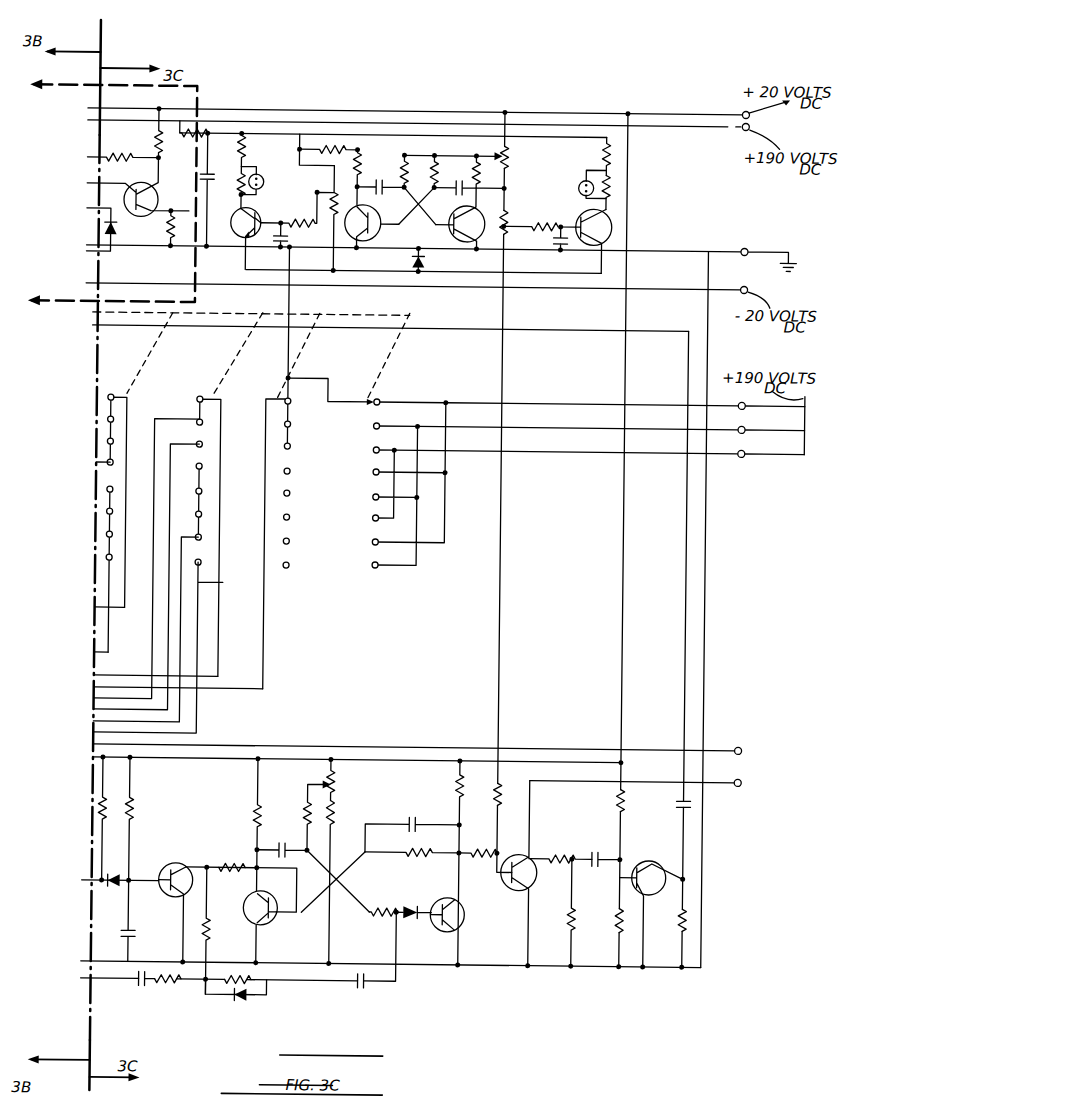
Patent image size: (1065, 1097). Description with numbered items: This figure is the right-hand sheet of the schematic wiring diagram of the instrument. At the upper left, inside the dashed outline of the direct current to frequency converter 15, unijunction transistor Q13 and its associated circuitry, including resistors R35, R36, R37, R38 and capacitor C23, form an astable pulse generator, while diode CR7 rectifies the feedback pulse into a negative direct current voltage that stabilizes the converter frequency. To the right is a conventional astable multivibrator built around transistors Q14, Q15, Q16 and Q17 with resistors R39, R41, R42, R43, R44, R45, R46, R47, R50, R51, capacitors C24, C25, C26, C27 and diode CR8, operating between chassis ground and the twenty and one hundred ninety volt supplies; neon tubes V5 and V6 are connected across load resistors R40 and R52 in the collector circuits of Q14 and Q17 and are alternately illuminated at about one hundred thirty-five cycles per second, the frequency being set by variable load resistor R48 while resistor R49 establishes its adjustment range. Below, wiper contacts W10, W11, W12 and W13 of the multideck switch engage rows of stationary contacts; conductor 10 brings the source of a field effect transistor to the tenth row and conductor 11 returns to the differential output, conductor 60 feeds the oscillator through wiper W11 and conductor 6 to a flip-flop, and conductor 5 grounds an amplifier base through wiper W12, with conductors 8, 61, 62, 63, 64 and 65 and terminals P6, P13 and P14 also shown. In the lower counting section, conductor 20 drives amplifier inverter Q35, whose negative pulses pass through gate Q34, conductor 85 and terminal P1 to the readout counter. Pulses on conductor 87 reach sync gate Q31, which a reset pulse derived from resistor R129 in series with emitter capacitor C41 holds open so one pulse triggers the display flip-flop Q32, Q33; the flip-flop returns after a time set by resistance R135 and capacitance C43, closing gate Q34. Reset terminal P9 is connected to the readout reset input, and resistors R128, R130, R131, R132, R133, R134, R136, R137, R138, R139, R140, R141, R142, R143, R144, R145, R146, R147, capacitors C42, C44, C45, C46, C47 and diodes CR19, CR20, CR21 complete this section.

The direct current to frequency converter 15 is at (200, 100).
The resistor R35 is at (122, 151).
The resistor R36 is at (140, 134).
The resistor R37 is at (158, 229).
The resistor R38 is at (189, 140).
The resistor R39 is at (259, 149).
The load resistor R40 is at (227, 187).
The resistor R41 is at (297, 208).
The resistor R42 is at (328, 158).
The resistor R43 is at (331, 196).
The resistor R44 is at (372, 176).
The resistor R45 is at (416, 162).
The resistor R46 is at (474, 157).
The resistor R47 is at (454, 172).
The variable load resistor R48 is at (523, 154).
The resistor R49 is at (509, 207).
The resistor R50 is at (538, 215).
The resistor R51 is at (614, 150).
The load resistor R52 is at (613, 181).
The capacitor C23 is at (190, 191).
The capacitor C24 is at (298, 235).
The capacitor C25 is at (380, 180).
The capacitor C26 is at (470, 182).
The capacitor C27 is at (544, 238).
The unijunction transistor Q13 is at (138, 187).
The transistor Q14 is at (261, 228).
The transistor Q15 is at (378, 225).
The transistor Q16 is at (456, 220).
The transistor Q17 is at (615, 222).
The neon tube V5 is at (265, 182).
The neon tube V6 is at (581, 181).
The diode CR7 is at (116, 238).
The diode CR8 is at (428, 259).
The wiper contact W10 is at (112, 394).
The wiper contact W11 is at (200, 395).
The wiper contact W12 is at (288, 399).
The wiper contact W13 is at (368, 397).
The conductor 10 is at (84, 463).
The conductor 11 is at (90, 608).
The lead 8 is at (84, 653).
The conductor 6 is at (238, 632).
The conductor 5 is at (284, 632).
The conductor 60 is at (166, 409).
The lead 61 is at (186, 436).
The lead 62 is at (184, 523).
The lead 63 is at (149, 652).
The lead 64 is at (394, 748).
The lead 65 is at (338, 761).
The conductor 20 is at (691, 599).
The pulse count conductor 85 is at (652, 772).
The conductor 87 is at (110, 980).
The terminal P1 is at (763, 804).
The terminal P6 is at (599, 444).
The reset pulse terminal P9 is at (742, 734).
The terminal P13 is at (611, 420).
The terminal P14 is at (742, 401).
The resistor R128 is at (96, 809).
The resistor R129 is at (142, 812).
The resistor R130 is at (172, 991).
The resistor R131 is at (227, 931).
The resistor R132 is at (224, 857).
The resistor R133 is at (258, 972).
The resistor R134 is at (237, 860).
The resistance R135 is at (303, 812).
The resistor R136 is at (342, 779).
The resistor R137 is at (353, 880).
The resistor R138 is at (378, 902).
The resistor R139 is at (412, 846).
The resistor R140 is at (463, 784).
The resistor R141 is at (479, 839).
The resistor R142 is at (511, 787).
The resistor R143 is at (560, 848).
The resistor R144 is at (554, 912).
The resistor R145 is at (595, 800).
The resistor R146 is at (604, 926).
The resistor R147 is at (666, 923).
The emitter capacitor C41 is at (147, 944).
The capacitor C42 is at (140, 974).
The capacitor C43 is at (286, 841).
The capacitor C44 is at (360, 993).
The capacitor C45 is at (412, 824).
The capacitor C46 is at (603, 851).
The capacitor C47 is at (668, 805).
The sync gate Q31 is at (181, 862).
The display flip-flop transistor Q32 is at (269, 900).
The display flip-flop transistor Q33 is at (466, 921).
The gate Q34 is at (530, 886).
The amplifier inverter Q35 is at (652, 903).
The diode CR19 is at (113, 864).
The diode CR20 is at (236, 1005).
The diode CR21 is at (420, 905).